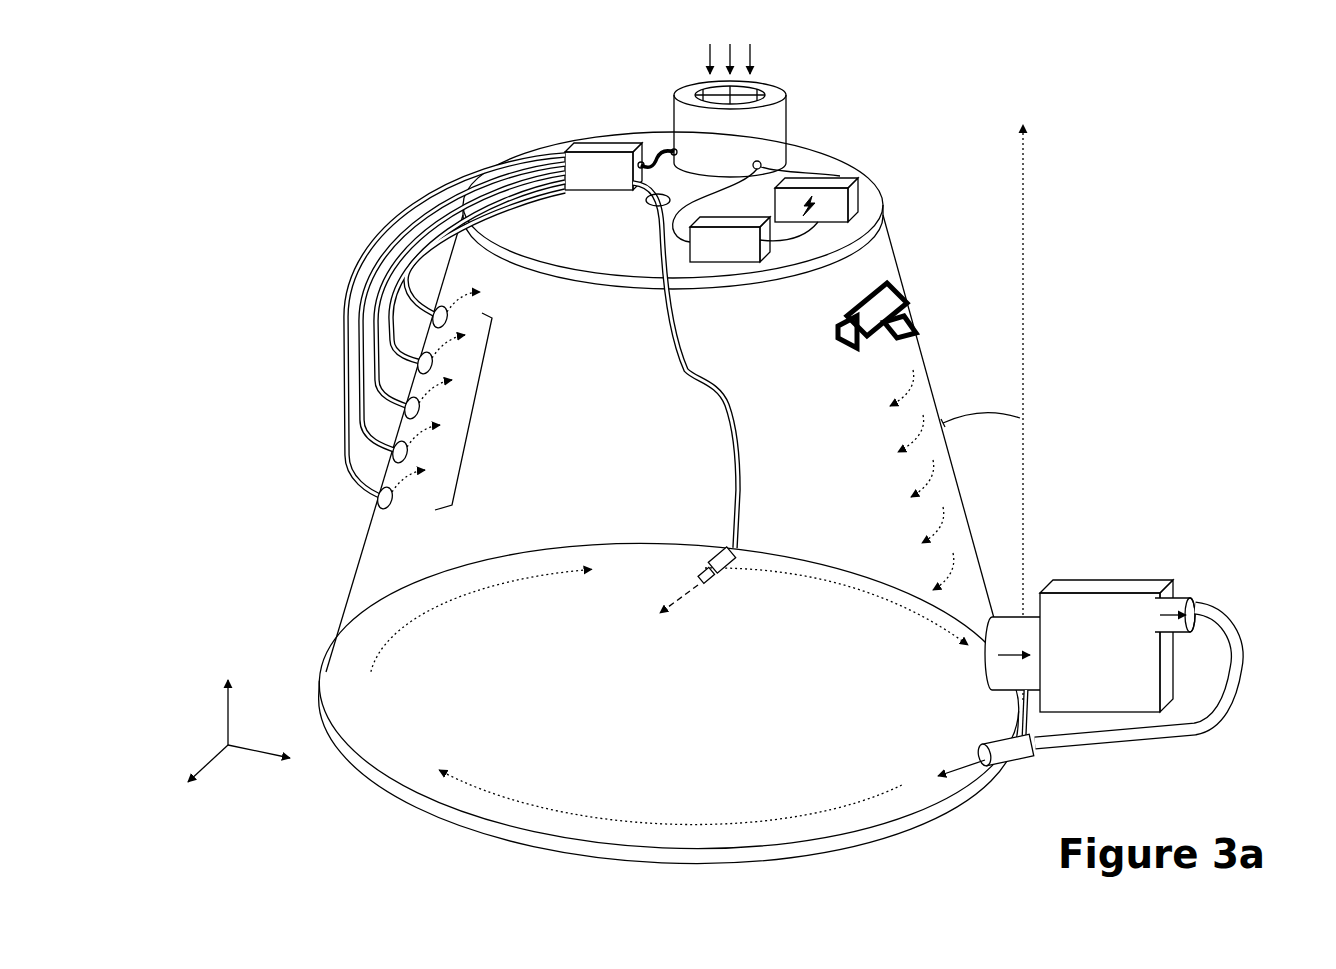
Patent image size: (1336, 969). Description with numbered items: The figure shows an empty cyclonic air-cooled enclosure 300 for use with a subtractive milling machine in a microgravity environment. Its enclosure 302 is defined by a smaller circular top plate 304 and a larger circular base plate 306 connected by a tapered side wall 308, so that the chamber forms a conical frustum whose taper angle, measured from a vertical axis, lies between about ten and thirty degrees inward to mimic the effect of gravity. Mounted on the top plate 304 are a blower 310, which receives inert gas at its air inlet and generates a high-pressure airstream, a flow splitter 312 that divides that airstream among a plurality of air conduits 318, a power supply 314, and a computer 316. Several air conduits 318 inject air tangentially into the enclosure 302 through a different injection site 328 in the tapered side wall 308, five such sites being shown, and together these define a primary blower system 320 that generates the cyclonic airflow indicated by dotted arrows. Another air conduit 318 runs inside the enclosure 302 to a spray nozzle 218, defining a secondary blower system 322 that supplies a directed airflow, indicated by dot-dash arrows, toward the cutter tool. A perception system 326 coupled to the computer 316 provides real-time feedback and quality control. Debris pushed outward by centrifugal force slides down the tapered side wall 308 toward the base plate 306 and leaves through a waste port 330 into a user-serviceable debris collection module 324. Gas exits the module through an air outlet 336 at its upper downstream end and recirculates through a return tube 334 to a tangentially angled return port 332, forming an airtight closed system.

The cyclonic air-cooled enclosure 300 is at (346, 104).
The enclosure 302 is at (905, 192).
The top plate 304 is at (806, 148).
The base plate 306 is at (425, 815).
The tapered side wall 308 is at (348, 583).
The blower 310 is at (786, 98).
The flow splitter 312 is at (582, 152).
The power supply 314 is at (846, 186).
The computer 316 is at (712, 228).
The air conduits 318 is at (738, 416).
The primary blower system 320 is at (470, 418).
The secondary blower system 322 is at (718, 592).
The debris collection module 324 is at (1120, 586).
The perception system 326 is at (893, 282).
The injection site 328 is at (389, 508).
The waste port 330 is at (983, 655).
The return port 332 is at (992, 742).
The return tube 334 is at (1240, 640).
The air outlet 336 is at (1182, 606).
The spray nozzle 218 is at (712, 556).